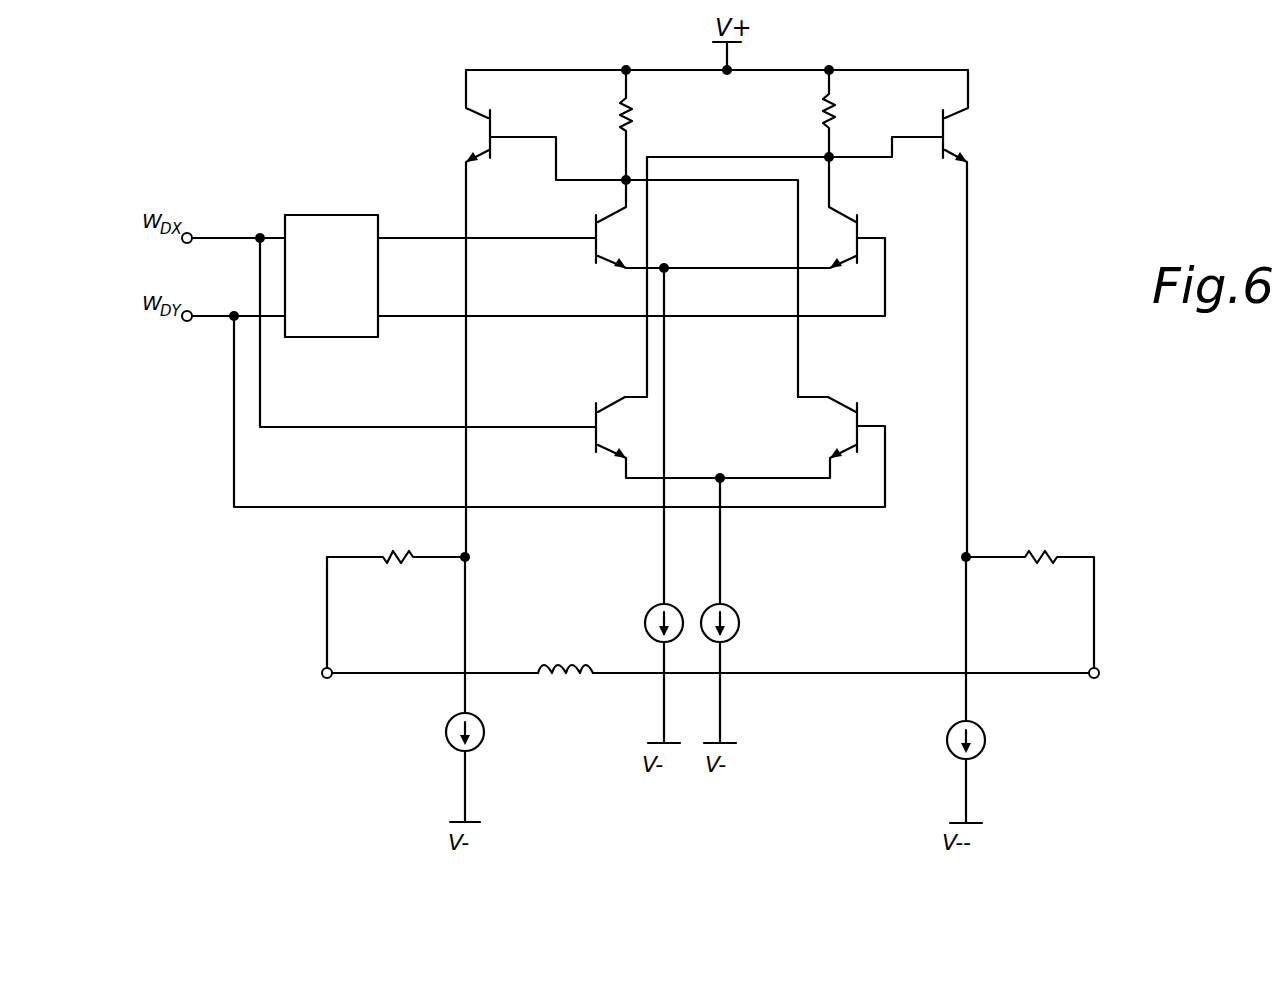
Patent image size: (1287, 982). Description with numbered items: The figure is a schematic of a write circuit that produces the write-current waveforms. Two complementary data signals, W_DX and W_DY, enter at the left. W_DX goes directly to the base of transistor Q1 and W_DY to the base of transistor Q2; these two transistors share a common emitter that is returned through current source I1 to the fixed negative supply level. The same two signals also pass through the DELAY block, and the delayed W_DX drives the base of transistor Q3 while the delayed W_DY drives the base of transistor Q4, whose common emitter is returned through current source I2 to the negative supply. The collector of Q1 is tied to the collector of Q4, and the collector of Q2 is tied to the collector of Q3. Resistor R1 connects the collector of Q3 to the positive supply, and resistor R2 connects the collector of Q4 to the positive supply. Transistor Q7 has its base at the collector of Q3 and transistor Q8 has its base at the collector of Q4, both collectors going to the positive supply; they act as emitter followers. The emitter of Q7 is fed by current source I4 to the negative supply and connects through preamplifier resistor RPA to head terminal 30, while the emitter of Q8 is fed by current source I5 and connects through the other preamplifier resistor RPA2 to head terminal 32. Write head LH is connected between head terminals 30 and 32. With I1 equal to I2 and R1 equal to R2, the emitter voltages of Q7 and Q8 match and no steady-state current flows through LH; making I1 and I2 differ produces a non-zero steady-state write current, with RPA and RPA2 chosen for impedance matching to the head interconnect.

The head terminal 30 is at (327, 679).
The head terminal 32 is at (1094, 679).
The transistor Q1 is at (490, 358).
The transistor Q2 is at (559, 411).
The transistor Q3 is at (521, 224).
The transistor Q4 is at (631, 236).
The transistor Q7 is at (531, 313).
The transistor Q8 is at (916, 313).
The resistor R1 is at (644, 125).
The resistor R2 is at (847, 113).
The preamplifier resistor RPA is at (396, 609).
The preamplifier resistor RPA2 is at (1030, 609).
The current source I1 is at (734, 610).
The current source I2 is at (643, 505).
The current source I4 is at (447, 689).
The current source I5 is at (945, 690).
The write head LH is at (565, 694).
The delay DELAY is at (331, 276).